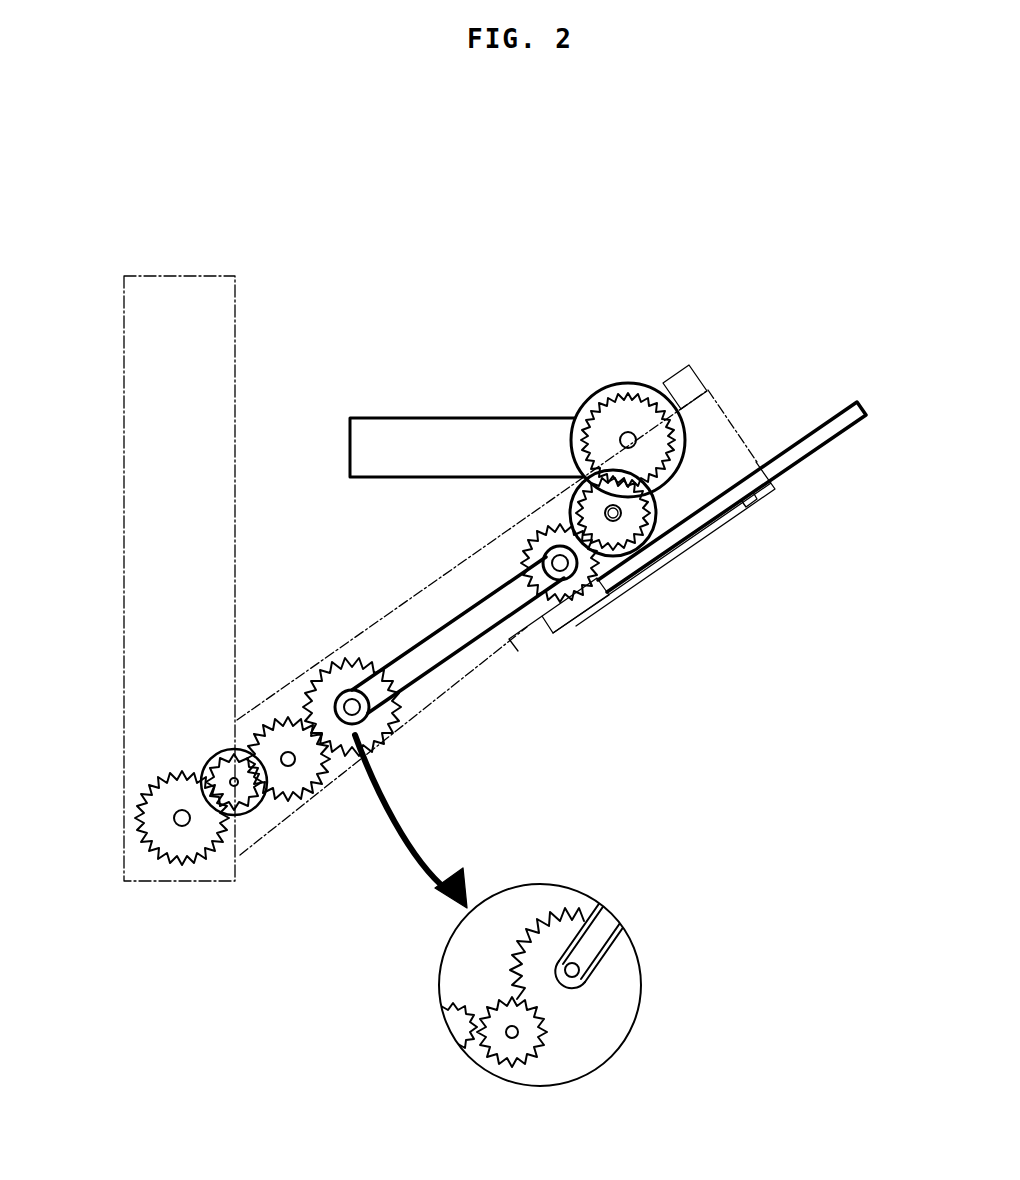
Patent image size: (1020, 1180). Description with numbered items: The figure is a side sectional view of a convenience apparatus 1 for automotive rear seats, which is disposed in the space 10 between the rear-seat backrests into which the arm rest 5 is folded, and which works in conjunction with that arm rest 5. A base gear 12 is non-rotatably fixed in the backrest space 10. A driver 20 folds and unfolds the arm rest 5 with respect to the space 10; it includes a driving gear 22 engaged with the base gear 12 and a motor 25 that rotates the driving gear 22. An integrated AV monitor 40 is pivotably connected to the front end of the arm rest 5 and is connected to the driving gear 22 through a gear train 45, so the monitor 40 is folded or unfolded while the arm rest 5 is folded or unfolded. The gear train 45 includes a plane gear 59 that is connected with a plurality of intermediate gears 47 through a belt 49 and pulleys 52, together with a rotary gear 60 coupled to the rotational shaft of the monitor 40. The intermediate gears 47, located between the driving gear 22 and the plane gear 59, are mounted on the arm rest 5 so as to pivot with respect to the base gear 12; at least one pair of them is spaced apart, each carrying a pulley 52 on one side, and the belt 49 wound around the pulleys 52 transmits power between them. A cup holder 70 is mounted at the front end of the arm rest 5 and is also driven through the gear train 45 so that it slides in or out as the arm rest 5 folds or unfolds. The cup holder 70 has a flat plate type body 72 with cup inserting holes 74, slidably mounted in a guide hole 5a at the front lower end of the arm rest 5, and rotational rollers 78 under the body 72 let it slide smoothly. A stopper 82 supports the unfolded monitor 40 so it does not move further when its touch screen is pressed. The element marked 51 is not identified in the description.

The convenience apparatus 1 is at (526, 226).
The arm rest 5 is at (440, 574).
The guide hole 5a is at (633, 743).
The space 10 is at (237, 311).
The base gear 12 is at (173, 843).
The driver 20 is at (287, 828).
The driving gear 22 is at (240, 797).
The motor 25 is at (217, 757).
The integrated AV monitor 40 is at (418, 432).
The gear train 45 is at (530, 717).
The intermediate gears 47 is at (337, 680).
The belt 49 is at (470, 647).
The transfer gear 51 is at (658, 518).
The pulley 52 is at (572, 575).
The plane gear 59 is at (627, 527).
The rotary gear 60 is at (620, 417).
The cup holder 70 is at (788, 432).
The flat plate type body 72 is at (848, 410).
The cup inserting holes 74 is at (817, 440).
The rotational rollers 78 is at (752, 502).
The stopper 82 is at (683, 370).